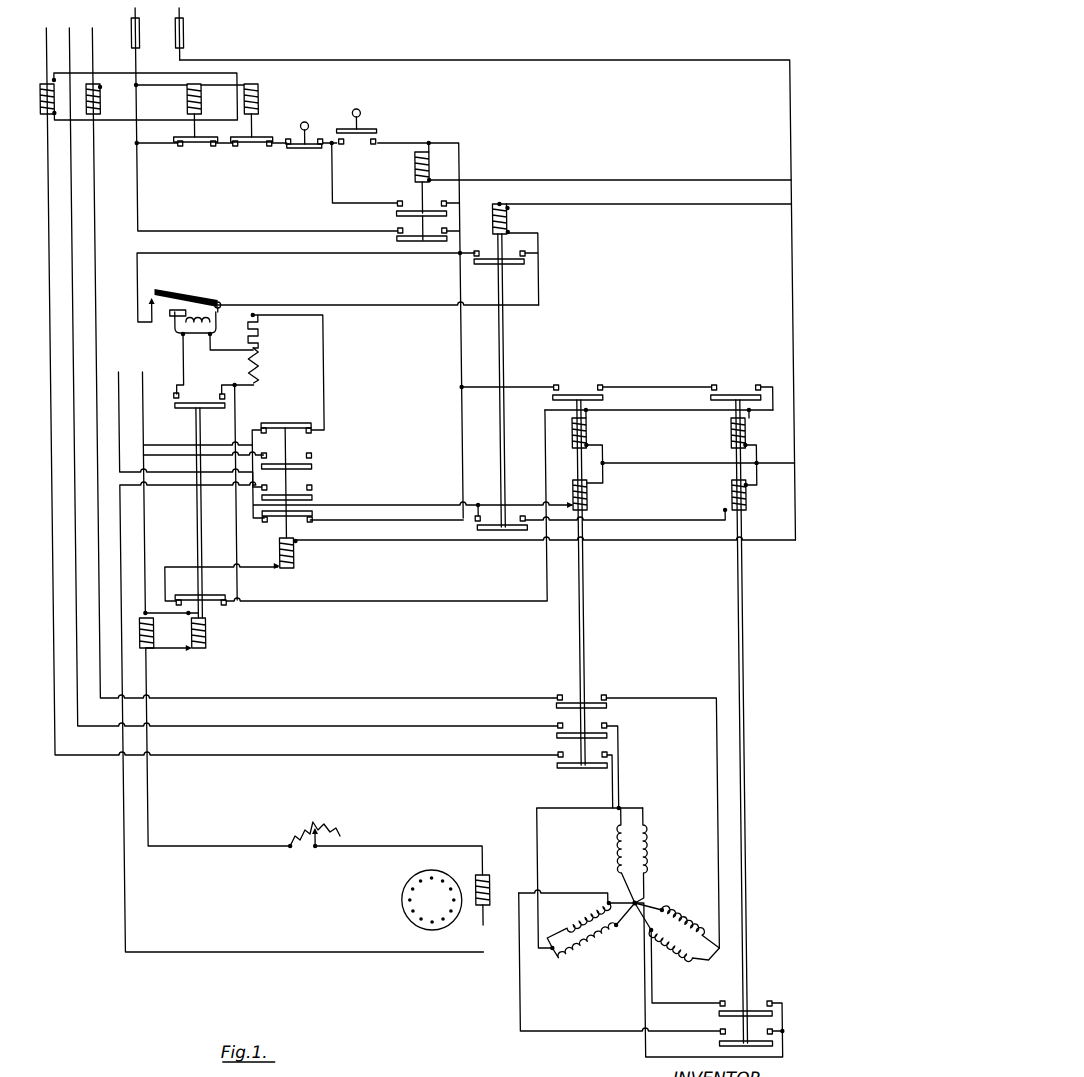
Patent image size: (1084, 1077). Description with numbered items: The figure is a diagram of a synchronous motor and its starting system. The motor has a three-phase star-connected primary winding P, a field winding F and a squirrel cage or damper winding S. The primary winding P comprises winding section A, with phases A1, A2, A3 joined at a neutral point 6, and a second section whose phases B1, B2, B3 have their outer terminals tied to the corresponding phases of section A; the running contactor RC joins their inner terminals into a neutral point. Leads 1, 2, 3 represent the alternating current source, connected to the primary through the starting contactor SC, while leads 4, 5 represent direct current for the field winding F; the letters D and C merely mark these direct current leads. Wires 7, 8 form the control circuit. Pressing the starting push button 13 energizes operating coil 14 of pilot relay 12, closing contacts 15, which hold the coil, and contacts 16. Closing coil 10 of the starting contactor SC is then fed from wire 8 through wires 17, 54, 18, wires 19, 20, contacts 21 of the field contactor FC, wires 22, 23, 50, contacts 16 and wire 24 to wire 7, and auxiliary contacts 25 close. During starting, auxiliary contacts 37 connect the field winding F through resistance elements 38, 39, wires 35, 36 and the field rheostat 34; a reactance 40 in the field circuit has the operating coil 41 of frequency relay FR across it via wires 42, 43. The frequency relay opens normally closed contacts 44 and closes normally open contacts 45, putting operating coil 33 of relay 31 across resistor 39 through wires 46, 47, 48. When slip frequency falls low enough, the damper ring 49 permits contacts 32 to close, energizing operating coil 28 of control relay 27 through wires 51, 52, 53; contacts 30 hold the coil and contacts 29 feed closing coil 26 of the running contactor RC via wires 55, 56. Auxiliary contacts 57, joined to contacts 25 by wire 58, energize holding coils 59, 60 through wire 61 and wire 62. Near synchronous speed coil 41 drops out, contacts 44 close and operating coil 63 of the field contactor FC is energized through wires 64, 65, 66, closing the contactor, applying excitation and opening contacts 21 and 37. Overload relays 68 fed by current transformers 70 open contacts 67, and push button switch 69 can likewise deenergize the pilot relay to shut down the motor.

The lead 1 is at (295, 391).
The lead 2 is at (307, 377).
The lead 3 is at (319, 363).
The lead 4 is at (189, 429).
The lead 5 is at (198, 492).
The neutral point 6 is at (626, 903).
The wire 7 is at (131, 71).
The wire 8 is at (173, 30).
The closing coil 10 is at (583, 500).
The pilot relay 12 is at (605, 149).
The starting push button 13 is at (364, 116).
The operating coil 14 is at (428, 167).
The contacts 15 is at (404, 208).
The contacts 16 is at (437, 233).
The wire 17 is at (782, 107).
The wire 18 is at (668, 463).
The wire 19 is at (507, 503).
The wire 20 is at (385, 505).
The contacts 21 is at (307, 516).
The wire 22 is at (455, 418).
The wire 23 is at (455, 343).
The wire 24 is at (229, 232).
The auxiliary contacts 25 is at (582, 385).
The closing coil 26 is at (742, 499).
The control relay 27 is at (498, 355).
The operating coil 28 is at (506, 218).
The contacts 29 is at (480, 531).
The contacts 30 is at (506, 263).
The relay 31 is at (221, 304).
The contacts 32 is at (150, 292).
The operating coil 33 is at (195, 332).
The field rheostat 34 is at (279, 827).
The wire 35 is at (148, 795).
The wire 36 is at (114, 801).
The auxiliary contacts 37 is at (277, 424).
The resistance element 38 is at (255, 334).
The resistance element 39 is at (256, 367).
The reactance 40 is at (137, 633).
The operating coil 41 is at (213, 646).
The wire 42 is at (178, 617).
The wire 43 is at (169, 652).
The normally closed contacts 44 is at (213, 596).
The normally open contacts 45 is at (190, 410).
The wire 46 is at (179, 363).
The wire 47 is at (230, 350).
The wire 48 is at (225, 384).
The damper ring 49 is at (166, 318).
The wire 50 is at (465, 254).
The wire 51 is at (280, 258).
The wire 52 is at (357, 305).
The wire 53 is at (630, 206).
The wire 54 is at (767, 462).
The wire 55 is at (634, 520).
The wire 56 is at (470, 501).
The auxiliary contacts 57 is at (732, 385).
The wire 58 is at (642, 385).
The holding coil 59 is at (583, 434).
The holding coil 60 is at (727, 432).
The wire 61 is at (636, 411).
The wire 62 is at (517, 386).
The operating coil 63 is at (289, 558).
The wire 64 is at (634, 541).
The wire 65 is at (165, 566).
The wire 66 is at (393, 603).
The contacts 67 is at (236, 146).
The overload relays 68 is at (243, 99).
The push button switch 69 is at (298, 125).
The current transformers 70 is at (100, 88).
The winding section A is at (57, 18).
The phase line C is at (82, 18).
The bus D is at (118, 356).
The field contactor FC is at (245, 483).
The frequency relay FR is at (206, 636).
The starting contactor SC is at (636, 674).
The running contactor RC is at (649, 728).
The squirrel cage or damper winding S is at (425, 900).
The field winding F is at (496, 897).
The primary winding P is at (591, 878).
The phase A1 is at (617, 855).
The phase B1 is at (654, 855).
The phase A2 is at (677, 923).
The phase B2 is at (677, 953).
The phase A3 is at (594, 941).
The phase B3 is at (577, 919).